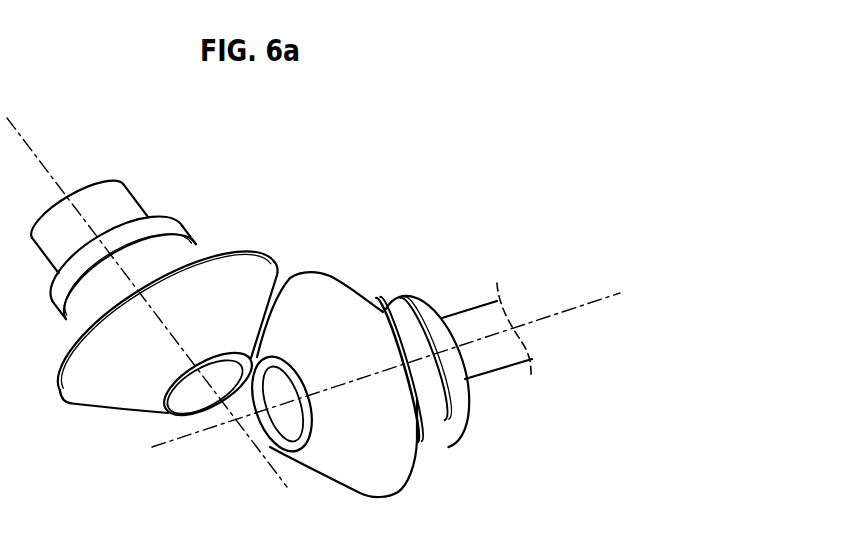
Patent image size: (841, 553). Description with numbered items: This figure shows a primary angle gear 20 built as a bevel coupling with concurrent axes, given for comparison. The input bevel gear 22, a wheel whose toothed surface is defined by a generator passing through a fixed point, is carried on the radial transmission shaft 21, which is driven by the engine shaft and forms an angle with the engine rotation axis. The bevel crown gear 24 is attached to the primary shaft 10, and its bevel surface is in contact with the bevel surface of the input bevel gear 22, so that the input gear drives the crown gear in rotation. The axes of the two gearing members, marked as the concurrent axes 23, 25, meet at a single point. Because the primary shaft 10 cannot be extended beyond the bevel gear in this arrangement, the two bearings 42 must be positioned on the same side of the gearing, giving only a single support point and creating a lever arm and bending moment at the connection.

The primary shaft 10 is at (475, 320).
The primary angle gear 20 is at (386, 340).
The radial transmission shaft 21 is at (115, 208).
The input bevel gear 22 is at (108, 390).
The concurrent axis 23 is at (17, 129).
The bevel crown gear 24 is at (317, 302).
The concurrent axis 25 is at (169, 446).
The bearings 42 is at (188, 248).